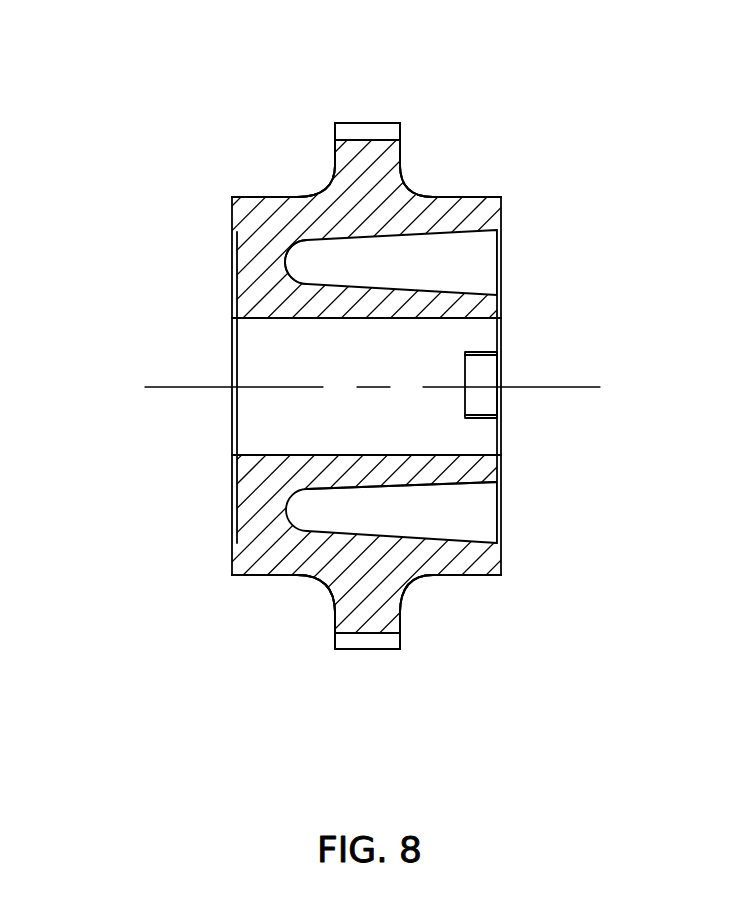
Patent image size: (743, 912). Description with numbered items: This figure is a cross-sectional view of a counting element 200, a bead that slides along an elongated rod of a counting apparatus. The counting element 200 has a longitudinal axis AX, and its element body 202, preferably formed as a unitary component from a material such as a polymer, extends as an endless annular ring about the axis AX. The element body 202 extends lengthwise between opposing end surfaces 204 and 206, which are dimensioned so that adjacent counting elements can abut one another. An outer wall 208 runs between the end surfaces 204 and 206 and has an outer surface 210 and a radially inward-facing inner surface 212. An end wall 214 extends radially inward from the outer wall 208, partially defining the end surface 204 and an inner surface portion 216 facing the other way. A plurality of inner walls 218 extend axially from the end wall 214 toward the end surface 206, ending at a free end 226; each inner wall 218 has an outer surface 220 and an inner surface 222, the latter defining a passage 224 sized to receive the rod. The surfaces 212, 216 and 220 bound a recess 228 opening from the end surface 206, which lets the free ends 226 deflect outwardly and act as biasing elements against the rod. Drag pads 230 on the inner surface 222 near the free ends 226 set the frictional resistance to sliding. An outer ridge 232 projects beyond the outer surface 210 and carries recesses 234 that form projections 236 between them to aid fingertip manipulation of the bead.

The counting element 200 is at (648, 149).
The element body 202 is at (250, 190).
The end surface 204 is at (232, 553).
The end surface 206 is at (503, 547).
The outer wall 208 is at (328, 215).
The outer surface 210 is at (455, 193).
The inner surface 212 is at (460, 233).
The end wall 214 is at (262, 266).
The inner surface portion 216 is at (297, 262).
The inner wall 218 is at (380, 473).
The outer surface 220 is at (427, 487).
The inner surface 222 is at (447, 452).
The passage 224 is at (258, 420).
The free end 226 is at (478, 305).
The recess 228 is at (476, 517).
The drag pad 230 is at (482, 368).
The outer ridge 232 is at (367, 613).
The recess 234 is at (347, 630).
The projection 236 is at (370, 643).
The longitudinal axis AX is at (578, 387).